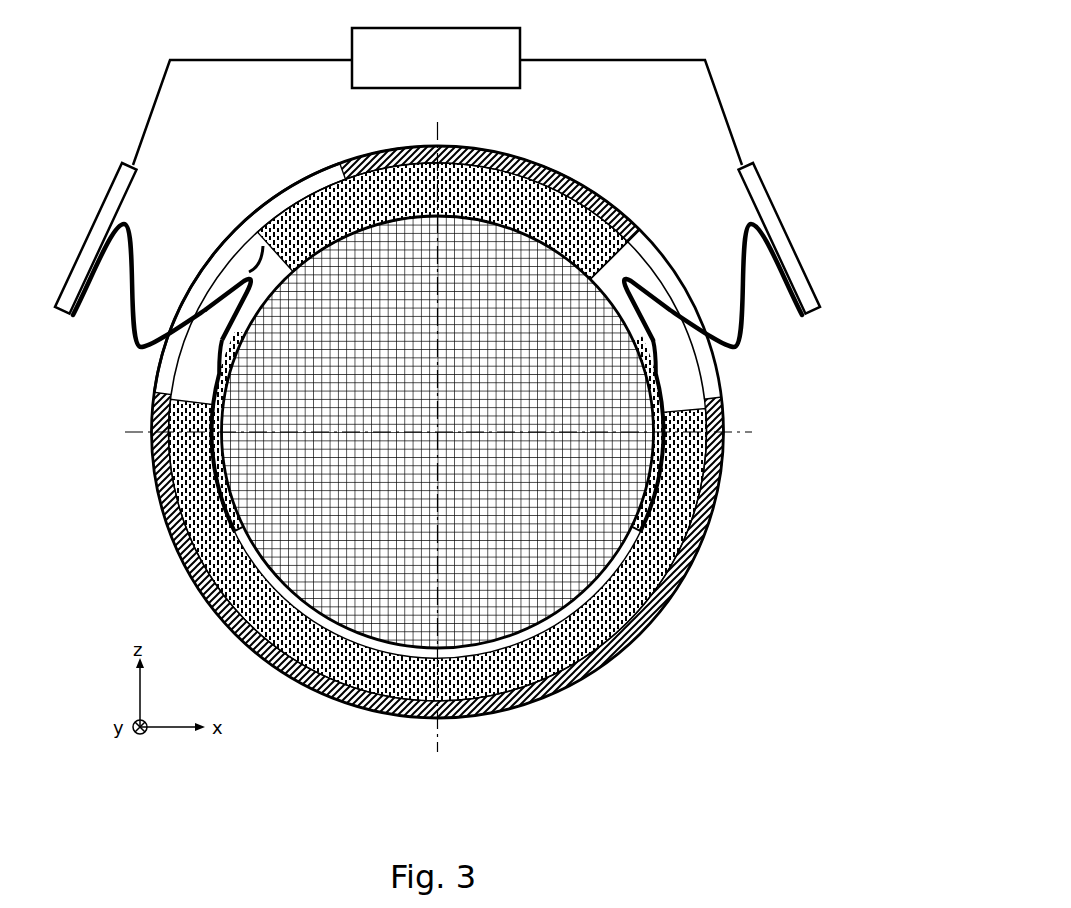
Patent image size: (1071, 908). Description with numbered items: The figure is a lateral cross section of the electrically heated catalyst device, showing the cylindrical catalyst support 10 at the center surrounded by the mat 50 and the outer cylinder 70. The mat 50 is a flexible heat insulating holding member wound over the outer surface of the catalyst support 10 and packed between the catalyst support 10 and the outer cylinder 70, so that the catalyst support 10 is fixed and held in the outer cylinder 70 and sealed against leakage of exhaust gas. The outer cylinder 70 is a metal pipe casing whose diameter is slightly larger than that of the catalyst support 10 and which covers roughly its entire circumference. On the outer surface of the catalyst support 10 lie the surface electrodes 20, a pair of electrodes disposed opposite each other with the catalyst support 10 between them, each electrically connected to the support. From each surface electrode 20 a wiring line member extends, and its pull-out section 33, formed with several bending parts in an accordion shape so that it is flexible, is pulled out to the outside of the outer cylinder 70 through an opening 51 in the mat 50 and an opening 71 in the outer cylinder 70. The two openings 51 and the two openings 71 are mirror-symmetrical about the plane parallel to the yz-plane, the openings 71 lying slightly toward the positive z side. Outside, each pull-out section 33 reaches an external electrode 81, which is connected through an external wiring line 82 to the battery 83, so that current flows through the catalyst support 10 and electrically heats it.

The catalyst support 10 is at (465, 412).
The surface electrode 20 is at (215, 380).
The pull-out section 33 is at (133, 307).
The mat 50 is at (462, 205).
The opening 51 is at (247, 270).
The outer cylinder 70 is at (295, 183).
The opening 71 is at (228, 240).
The external electrode 81 is at (67, 298).
The external wiring line 82 is at (142, 130).
The battery 83 is at (520, 40).